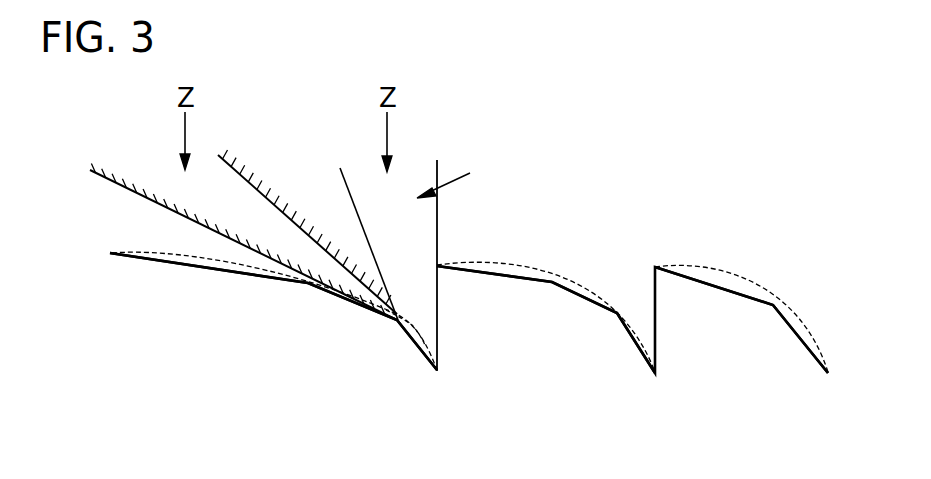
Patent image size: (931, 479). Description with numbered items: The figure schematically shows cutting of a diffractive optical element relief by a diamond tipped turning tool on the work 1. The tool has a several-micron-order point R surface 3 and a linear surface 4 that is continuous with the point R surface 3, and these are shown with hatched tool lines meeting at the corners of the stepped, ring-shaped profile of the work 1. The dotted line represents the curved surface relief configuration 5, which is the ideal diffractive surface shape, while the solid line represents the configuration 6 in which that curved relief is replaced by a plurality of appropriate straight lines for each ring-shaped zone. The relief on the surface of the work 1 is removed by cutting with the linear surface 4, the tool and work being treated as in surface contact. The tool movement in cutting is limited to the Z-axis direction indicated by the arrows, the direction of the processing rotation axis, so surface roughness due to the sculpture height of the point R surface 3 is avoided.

The work 1 is at (604, 342).
The point R surface 3 is at (388, 323).
The linear surface 4 is at (217, 247).
The curved surface relief configuration 5 is at (233, 260).
The configuration constituted by a plurality of straight lines 6 is at (172, 260).